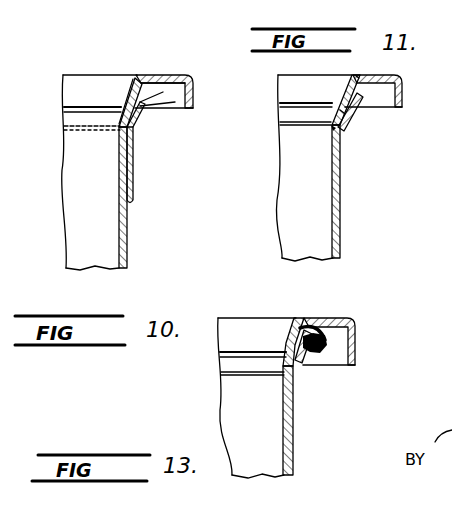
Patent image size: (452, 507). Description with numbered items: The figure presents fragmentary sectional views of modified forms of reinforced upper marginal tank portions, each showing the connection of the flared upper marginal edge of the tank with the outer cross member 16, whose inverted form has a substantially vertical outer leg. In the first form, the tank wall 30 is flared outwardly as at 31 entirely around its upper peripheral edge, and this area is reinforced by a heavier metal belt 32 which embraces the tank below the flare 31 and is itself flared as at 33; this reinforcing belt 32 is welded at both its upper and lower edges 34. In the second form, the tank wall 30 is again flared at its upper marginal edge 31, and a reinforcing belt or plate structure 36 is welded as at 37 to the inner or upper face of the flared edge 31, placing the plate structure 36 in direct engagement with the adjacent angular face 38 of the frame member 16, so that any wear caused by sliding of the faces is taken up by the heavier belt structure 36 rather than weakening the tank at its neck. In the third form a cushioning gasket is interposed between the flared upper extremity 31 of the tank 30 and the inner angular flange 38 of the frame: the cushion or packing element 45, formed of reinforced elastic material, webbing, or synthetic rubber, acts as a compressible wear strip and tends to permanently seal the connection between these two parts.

In FIG. 10, the outer cross member 16 is at (158, 78).
In FIG. 11, the outer cross member 16 is at (392, 78).
In FIG. 13, the outer cross member 16 is at (337, 317).
In FIG. 10, the tank wall 30 is at (127, 247).
In FIG. 11, the tank wall 30 is at (342, 183).
In FIG. 13, the tank wall 30 is at (298, 430).
In FIG. 10, the flared upper marginal edge 31 is at (166, 96).
In FIG. 11, the flared upper marginal edge 31 is at (347, 121).
In FIG. 13, the flared upper marginal edge 31 is at (303, 378).
In FIG. 10, the reinforcing belt 32 is at (133, 165).
In FIG. 10, the flare of reinforcing belt 33 is at (137, 120).
In FIG. 10, the welded edges 34 is at (148, 103).
In FIG. 11, the reinforcing plate structure 36 is at (336, 111).
In FIG. 11, the weld 37 is at (355, 77).
In FIG. 10, the inner angular flange 38 is at (131, 94).
In FIG. 11, the inner angular flange 38 is at (345, 83).
In FIG. 13, the inner angular flange 38 is at (288, 338).
In FIG. 13, the cushion or packing element 45 is at (283, 363).